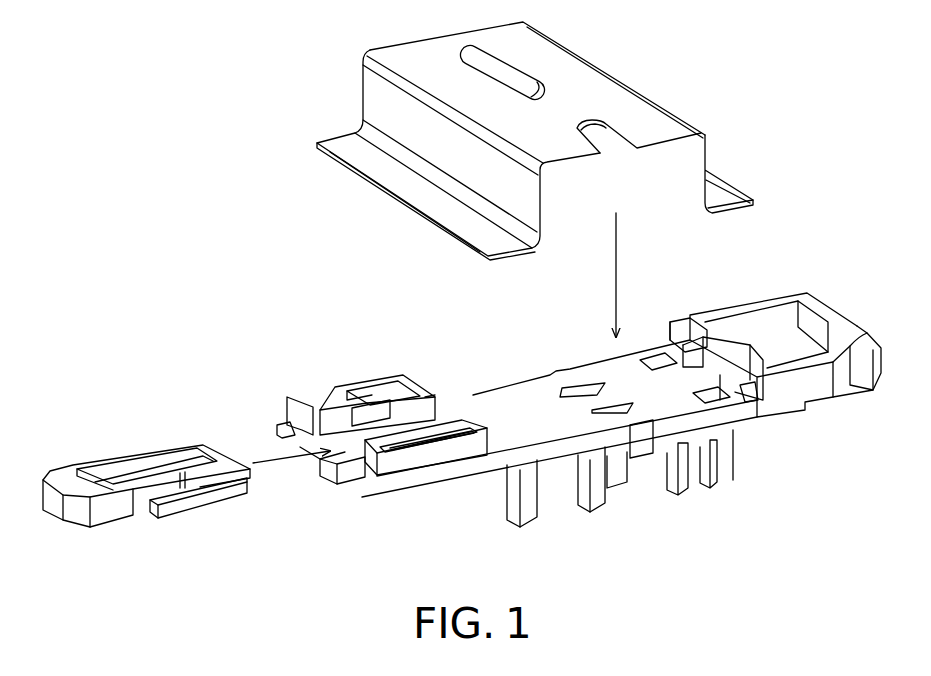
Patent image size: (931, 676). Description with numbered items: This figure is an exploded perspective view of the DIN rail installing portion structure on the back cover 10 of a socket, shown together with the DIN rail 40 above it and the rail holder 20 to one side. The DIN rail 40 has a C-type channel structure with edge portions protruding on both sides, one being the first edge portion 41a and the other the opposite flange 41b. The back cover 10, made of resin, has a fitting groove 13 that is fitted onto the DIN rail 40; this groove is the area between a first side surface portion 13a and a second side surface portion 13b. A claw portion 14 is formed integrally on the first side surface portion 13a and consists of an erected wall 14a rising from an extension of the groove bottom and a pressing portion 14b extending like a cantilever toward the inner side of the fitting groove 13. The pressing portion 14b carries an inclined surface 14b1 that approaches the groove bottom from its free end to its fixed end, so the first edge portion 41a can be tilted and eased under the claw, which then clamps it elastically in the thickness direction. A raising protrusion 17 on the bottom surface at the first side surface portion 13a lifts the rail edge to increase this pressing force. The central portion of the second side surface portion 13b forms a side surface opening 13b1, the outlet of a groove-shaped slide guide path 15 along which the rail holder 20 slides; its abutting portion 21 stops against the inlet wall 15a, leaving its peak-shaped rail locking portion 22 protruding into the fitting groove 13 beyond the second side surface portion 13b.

The DIN rail 40 is at (632, 83).
The first edge portion 41a is at (733, 214).
The flange portion 41b is at (508, 260).
The back cover 10 is at (818, 298).
The fitting groove 13 is at (493, 455).
The first side surface portion 13a is at (678, 325).
The second side surface portion 13b is at (420, 385).
The side surface opening 13b1 is at (433, 396).
The claw portion 14 is at (750, 380).
The erected wall 14a is at (745, 397).
The pressing portion 14b is at (728, 370).
The inclined surface 14b1 is at (752, 393).
The slide guide path 15 is at (388, 410).
The inlet wall 15a is at (300, 410).
The raising protrusion 17 is at (655, 360).
The rail holder 20 is at (85, 460).
The abutting portion 21 is at (97, 463).
The rail locking portion 22 is at (248, 463).